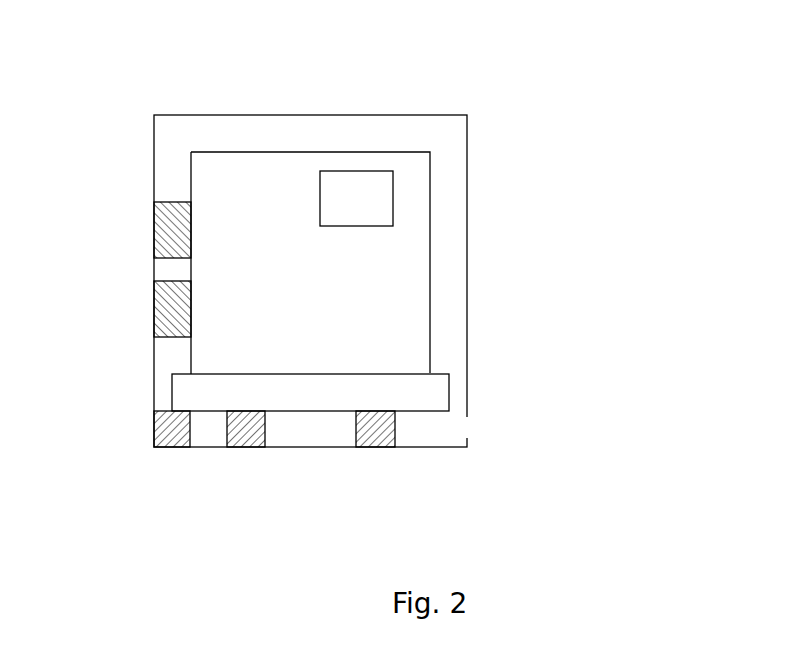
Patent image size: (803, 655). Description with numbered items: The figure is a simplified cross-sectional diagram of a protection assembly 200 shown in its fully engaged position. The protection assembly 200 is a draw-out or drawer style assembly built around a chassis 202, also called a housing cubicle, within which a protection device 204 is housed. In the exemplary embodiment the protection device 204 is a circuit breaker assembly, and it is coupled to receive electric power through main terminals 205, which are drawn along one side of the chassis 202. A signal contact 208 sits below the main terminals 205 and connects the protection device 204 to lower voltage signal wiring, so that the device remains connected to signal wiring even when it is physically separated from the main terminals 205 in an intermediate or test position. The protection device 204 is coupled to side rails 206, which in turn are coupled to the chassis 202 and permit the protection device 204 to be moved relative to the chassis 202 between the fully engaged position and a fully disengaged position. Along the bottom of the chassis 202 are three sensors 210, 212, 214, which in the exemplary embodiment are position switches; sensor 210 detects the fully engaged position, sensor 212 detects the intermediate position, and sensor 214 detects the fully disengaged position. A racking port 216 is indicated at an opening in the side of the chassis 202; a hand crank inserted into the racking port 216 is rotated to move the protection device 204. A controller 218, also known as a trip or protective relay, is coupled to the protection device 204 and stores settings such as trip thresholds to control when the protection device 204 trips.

The protection assembly 200 is at (610, 100).
The chassis 202 is at (397, 115).
The protection device 204 is at (191, 163).
The main terminals 205 is at (173, 243).
The side rails 206 is at (172, 392).
The signal contact 208 is at (175, 318).
The sensor 210 is at (173, 440).
The sensor 212 is at (248, 440).
The sensor 214 is at (375, 440).
The racking port 216 is at (482, 423).
The controller 218 is at (375, 226).